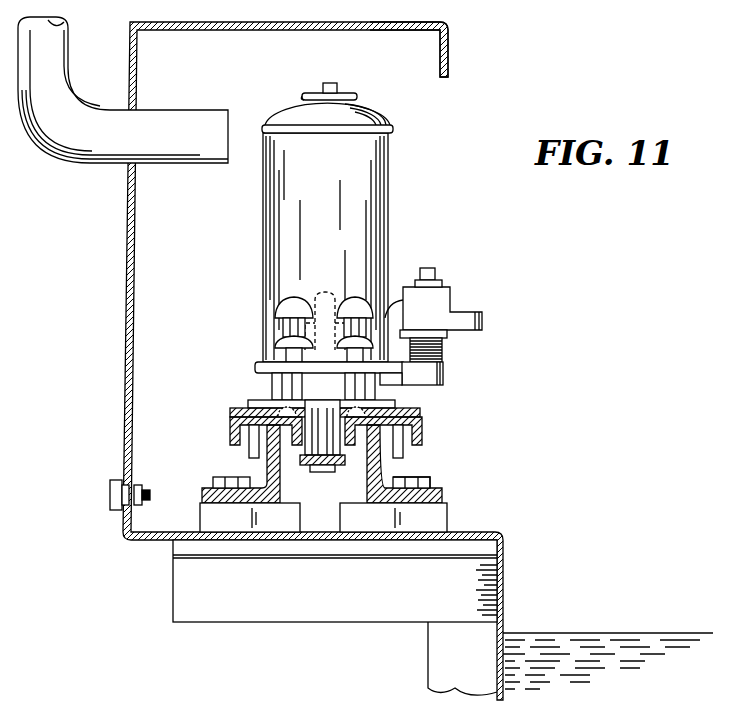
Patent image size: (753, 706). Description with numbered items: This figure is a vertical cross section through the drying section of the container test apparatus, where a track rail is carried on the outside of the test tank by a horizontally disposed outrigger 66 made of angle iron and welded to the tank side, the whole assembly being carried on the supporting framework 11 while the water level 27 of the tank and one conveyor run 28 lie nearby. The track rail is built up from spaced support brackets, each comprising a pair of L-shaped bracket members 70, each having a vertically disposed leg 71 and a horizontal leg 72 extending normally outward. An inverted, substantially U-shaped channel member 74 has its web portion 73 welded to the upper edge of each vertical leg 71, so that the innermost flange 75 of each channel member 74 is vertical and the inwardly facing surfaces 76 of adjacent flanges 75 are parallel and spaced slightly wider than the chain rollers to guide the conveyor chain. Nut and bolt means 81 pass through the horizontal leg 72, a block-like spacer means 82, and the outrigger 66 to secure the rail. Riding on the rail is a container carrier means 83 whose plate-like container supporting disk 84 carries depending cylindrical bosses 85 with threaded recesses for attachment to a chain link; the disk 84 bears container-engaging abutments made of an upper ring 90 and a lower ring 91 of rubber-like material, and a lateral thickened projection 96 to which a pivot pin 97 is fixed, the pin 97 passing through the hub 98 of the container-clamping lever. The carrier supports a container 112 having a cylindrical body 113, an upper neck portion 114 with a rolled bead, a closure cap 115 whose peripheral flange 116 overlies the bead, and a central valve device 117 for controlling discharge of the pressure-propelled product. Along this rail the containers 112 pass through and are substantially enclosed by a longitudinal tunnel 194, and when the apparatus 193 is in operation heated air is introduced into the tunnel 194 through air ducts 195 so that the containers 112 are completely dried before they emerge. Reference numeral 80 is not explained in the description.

The supporting framework 11 is at (440, 655).
The water level 27 is at (566, 632).
The conveyor run 28 is at (517, 8).
The outrigger 66 is at (268, 605).
The bracket member 70 is at (262, 480).
The leg 71 is at (279, 496).
The leg 72 is at (245, 495).
The web portion 73 is at (382, 455).
The channel member 74 is at (422, 440).
The flange 75 is at (345, 458).
The inwardly facing surface 76 is at (245, 440).
The mounting plate 80 is at (240, 410).
The nut and bolt means 81 is at (432, 482).
The spacer means 82 is at (437, 521).
The container carrier means 83 is at (452, 358).
The container supporting disk 84 is at (258, 365).
The cylindrical boss 85 is at (392, 402).
The upper ring 90 is at (285, 305).
The lower ring 91 is at (282, 335).
The projection 96 is at (443, 375).
The pivot pin 97 is at (435, 268).
The hub 98 is at (440, 297).
The container 112 is at (363, 247).
The cylindrical body 113 is at (370, 193).
The neck portion 114 is at (375, 118).
The closure cap 115 is at (347, 92).
The peripheral flange 116 is at (308, 95).
The valve device 117 is at (337, 86).
The apparatus 193 is at (636, 0).
The tunnel 194 is at (372, 22).
The air duct 195 is at (103, 143).